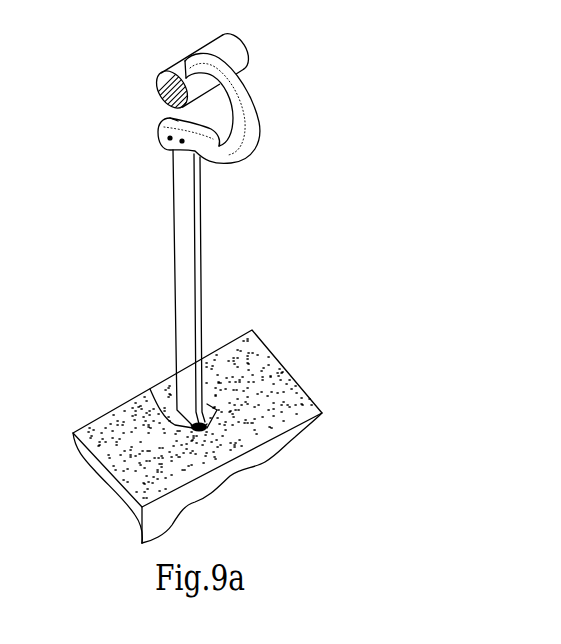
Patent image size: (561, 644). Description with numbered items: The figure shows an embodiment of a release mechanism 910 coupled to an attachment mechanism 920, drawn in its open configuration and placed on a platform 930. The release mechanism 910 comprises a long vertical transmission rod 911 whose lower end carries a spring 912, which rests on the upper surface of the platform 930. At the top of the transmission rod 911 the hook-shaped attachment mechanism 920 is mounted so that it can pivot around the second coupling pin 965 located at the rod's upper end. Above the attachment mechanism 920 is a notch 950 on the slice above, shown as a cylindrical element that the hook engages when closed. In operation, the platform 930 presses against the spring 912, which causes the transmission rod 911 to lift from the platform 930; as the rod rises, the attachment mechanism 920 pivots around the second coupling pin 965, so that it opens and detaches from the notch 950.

The release mechanism 910 is at (87, 321).
The transmission rod 911 is at (177, 354).
The spring 912 is at (150, 389).
The attachment mechanism 920 is at (256, 118).
The platform 930 is at (292, 376).
The notch 950 is at (156, 98).
The second coupling pin 965 is at (201, 160).